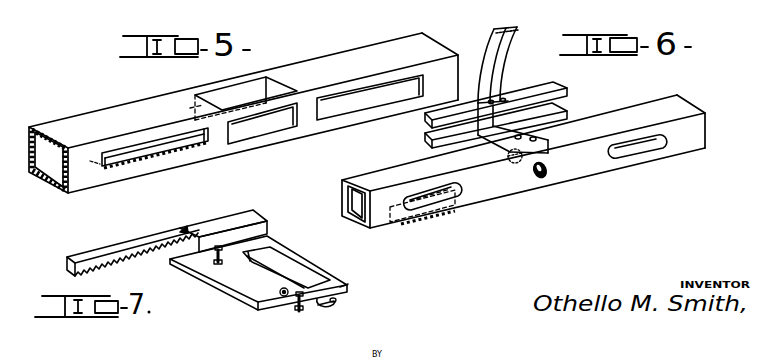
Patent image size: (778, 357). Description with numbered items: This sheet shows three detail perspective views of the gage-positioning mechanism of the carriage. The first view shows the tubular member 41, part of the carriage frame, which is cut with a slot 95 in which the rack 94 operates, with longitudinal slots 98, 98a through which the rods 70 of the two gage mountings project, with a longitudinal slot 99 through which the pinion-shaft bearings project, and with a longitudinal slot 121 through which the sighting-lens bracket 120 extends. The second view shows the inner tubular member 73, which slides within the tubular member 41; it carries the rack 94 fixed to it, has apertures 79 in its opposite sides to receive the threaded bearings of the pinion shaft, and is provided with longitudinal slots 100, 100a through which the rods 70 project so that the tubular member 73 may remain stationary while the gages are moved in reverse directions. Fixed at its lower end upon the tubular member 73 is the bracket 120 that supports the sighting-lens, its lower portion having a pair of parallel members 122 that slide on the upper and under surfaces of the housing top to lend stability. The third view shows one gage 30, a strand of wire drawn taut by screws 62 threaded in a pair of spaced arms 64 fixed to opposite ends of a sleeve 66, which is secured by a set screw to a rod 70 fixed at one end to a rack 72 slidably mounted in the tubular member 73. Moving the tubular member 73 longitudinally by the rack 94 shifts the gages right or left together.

In FIG. 5, the tubular member 41 is at (107, 99).
In FIG. 5, the slot 95 is at (157, 148).
In FIG. 5, the longitudinal slot 98 is at (338, 107).
In FIG. 5, the longitudinal slot 98a is at (207, 134).
In FIG. 5, the longitudinal slot 99 is at (231, 96).
In FIG. 5, the longitudinal slot 121 is at (283, 82).
In FIG. 6, the tubular member 73 is at (514, 189).
In FIG. 6, the apertures 79 is at (547, 176).
In FIG. 6, the rack 94 is at (428, 225).
In FIG. 6, the longitudinal slot 100 is at (645, 148).
In FIG. 6, the longitudinal slot 100a is at (464, 194).
In FIG. 6, the bracket 120 is at (495, 30).
In FIG. 6, the parallel members 122 is at (568, 89).
In FIG. 7, the gage 30 is at (258, 274).
In FIG. 7, the screws 62 is at (299, 311).
In FIG. 7, the arms 64 is at (348, 287).
In FIG. 7, the sleeve 66 is at (324, 308).
In FIG. 7, the rod 70 is at (338, 304).
In FIG. 7, the rack 72 is at (126, 247).